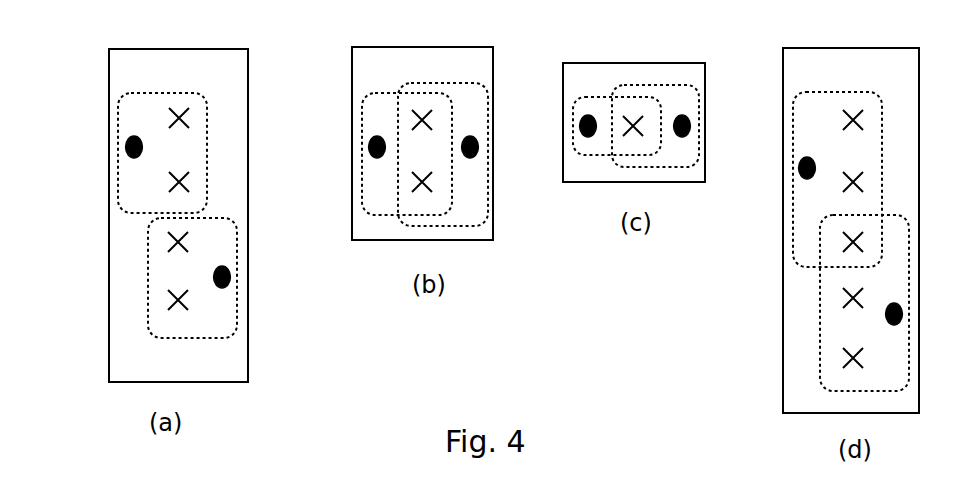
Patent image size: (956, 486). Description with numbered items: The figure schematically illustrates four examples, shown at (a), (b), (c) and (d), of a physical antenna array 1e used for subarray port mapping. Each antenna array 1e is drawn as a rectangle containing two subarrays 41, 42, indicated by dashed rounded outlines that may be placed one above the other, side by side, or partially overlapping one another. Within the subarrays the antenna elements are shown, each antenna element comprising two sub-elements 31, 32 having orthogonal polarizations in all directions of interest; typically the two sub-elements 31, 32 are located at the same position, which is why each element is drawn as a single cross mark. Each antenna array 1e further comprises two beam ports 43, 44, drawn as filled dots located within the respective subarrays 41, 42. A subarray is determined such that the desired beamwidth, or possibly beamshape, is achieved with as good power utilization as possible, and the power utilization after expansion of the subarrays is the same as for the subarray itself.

The physical antenna array 1e is at (109, 318).
The subarray 41 is at (138, 92).
The subarray 42 is at (233, 332).
The sub-element 31 is at (171, 108).
The sub-element 32 is at (183, 118).
The beam port 43 is at (130, 143).
The beam port 44 is at (227, 283).